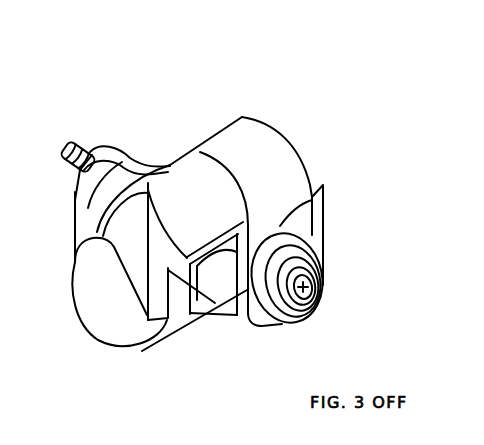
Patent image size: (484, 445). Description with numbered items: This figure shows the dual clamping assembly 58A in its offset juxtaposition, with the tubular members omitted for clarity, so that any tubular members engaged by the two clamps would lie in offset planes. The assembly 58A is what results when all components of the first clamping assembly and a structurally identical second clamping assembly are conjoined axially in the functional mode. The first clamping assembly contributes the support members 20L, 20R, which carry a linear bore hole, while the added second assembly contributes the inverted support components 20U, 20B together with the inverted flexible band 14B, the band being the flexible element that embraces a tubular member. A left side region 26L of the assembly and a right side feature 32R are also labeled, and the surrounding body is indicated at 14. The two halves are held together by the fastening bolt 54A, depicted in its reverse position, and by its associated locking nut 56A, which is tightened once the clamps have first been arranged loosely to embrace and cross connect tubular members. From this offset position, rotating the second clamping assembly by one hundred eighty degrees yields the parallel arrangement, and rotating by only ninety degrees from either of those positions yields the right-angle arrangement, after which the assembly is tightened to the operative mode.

The assembly 58A is at (198, 114).
The housing 14 is at (248, 143).
The inverted flexible band 14B is at (110, 313).
The inverted support component 20U is at (146, 158).
The inverted support component 20B is at (133, 258).
The support member 20L is at (173, 260).
The support member 20R is at (222, 290).
The left side surface 26L is at (209, 224).
The right pivot pin 32R is at (325, 193).
The fastening bolt 54A is at (296, 303).
The locking nut 56A is at (108, 148).